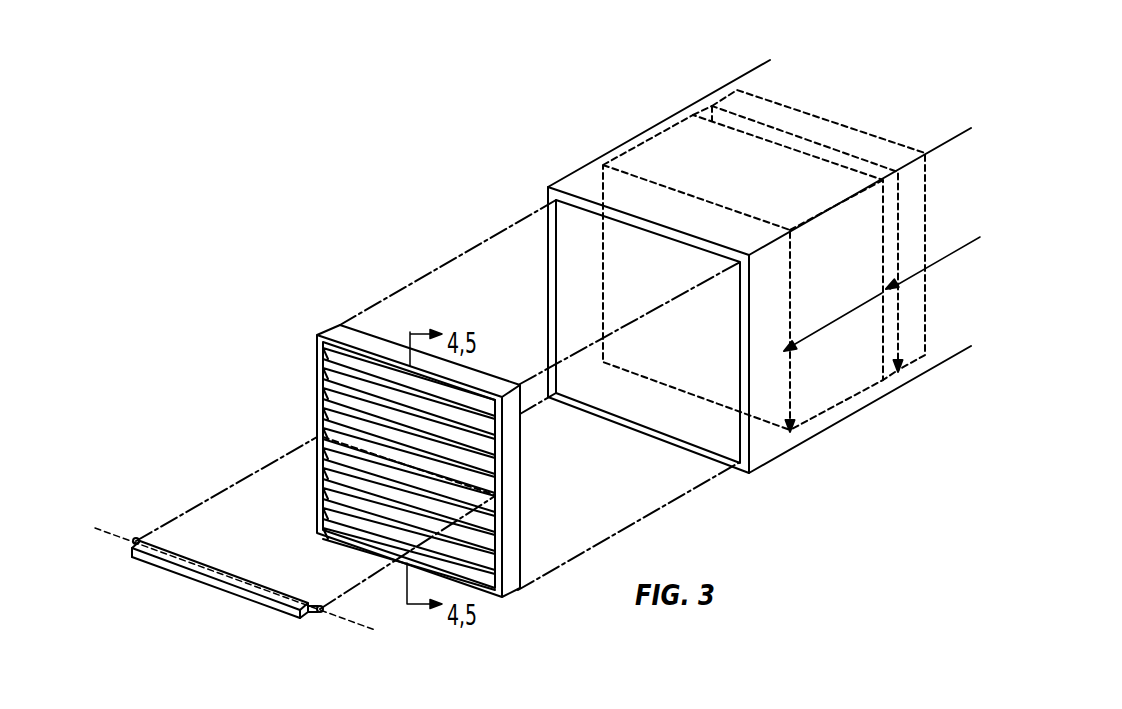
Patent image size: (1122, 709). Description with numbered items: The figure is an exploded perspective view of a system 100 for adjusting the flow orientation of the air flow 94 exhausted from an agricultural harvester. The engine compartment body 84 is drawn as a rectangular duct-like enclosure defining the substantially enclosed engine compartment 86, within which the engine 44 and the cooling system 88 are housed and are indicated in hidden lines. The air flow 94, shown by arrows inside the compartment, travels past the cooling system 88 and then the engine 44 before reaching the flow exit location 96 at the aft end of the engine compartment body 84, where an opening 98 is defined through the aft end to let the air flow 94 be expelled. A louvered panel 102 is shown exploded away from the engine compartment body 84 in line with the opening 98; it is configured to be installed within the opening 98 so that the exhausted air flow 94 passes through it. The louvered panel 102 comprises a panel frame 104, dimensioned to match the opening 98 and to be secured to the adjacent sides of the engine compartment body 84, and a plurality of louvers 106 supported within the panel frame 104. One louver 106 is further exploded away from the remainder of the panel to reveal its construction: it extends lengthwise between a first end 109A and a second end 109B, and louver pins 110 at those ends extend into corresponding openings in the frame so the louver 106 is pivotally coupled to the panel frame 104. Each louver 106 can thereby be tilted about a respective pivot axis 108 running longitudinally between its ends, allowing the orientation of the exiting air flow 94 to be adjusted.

The system 100 is at (433, 187).
The engine 44 is at (672, 153).
The engine compartment body 84 is at (585, 182).
The engine compartment 86 is at (722, 104).
The cooling system 88 is at (800, 120).
The air flow 94 is at (963, 248).
The flow exit location 96 is at (737, 480).
The opening 98 is at (566, 234).
The louvered panel 102 is at (358, 338).
The panel frame 104 is at (490, 390).
The louvers 106 is at (332, 393).
The pivot axis 108 is at (255, 588).
The first end 109A is at (131, 552).
The second end 109B is at (303, 619).
The louver pins 110 is at (137, 540).